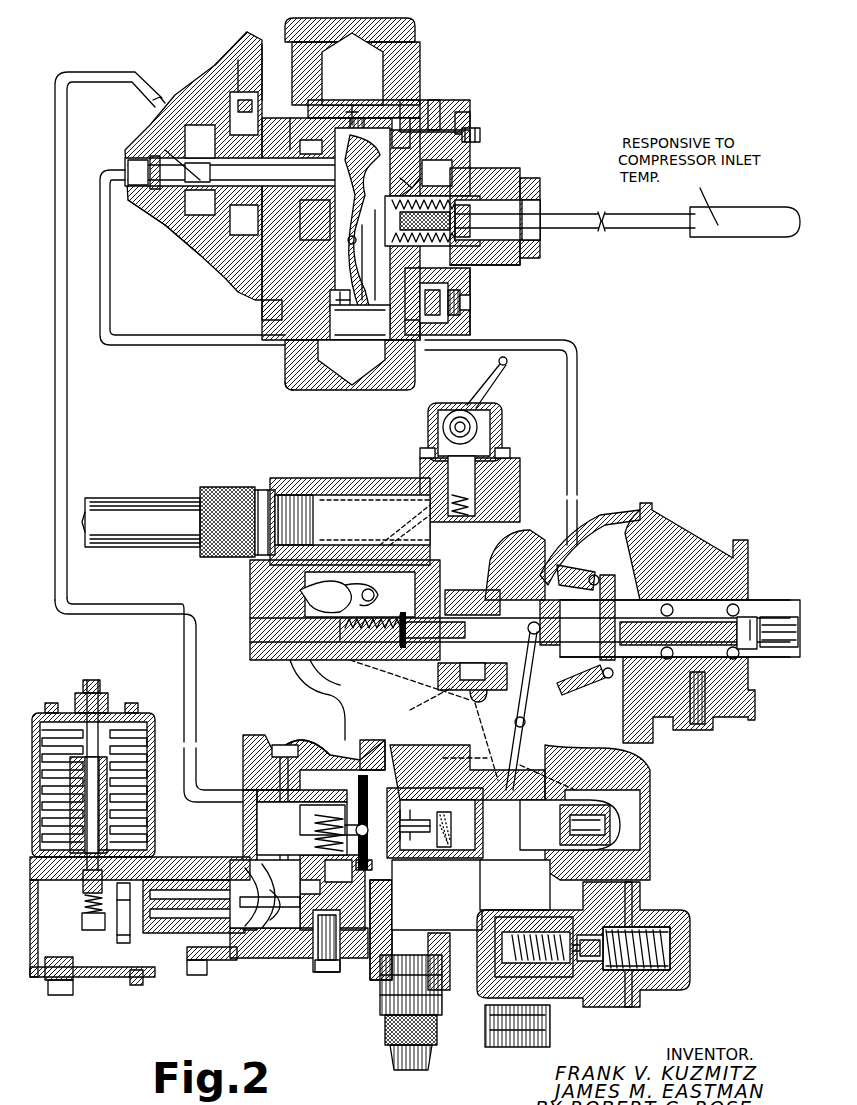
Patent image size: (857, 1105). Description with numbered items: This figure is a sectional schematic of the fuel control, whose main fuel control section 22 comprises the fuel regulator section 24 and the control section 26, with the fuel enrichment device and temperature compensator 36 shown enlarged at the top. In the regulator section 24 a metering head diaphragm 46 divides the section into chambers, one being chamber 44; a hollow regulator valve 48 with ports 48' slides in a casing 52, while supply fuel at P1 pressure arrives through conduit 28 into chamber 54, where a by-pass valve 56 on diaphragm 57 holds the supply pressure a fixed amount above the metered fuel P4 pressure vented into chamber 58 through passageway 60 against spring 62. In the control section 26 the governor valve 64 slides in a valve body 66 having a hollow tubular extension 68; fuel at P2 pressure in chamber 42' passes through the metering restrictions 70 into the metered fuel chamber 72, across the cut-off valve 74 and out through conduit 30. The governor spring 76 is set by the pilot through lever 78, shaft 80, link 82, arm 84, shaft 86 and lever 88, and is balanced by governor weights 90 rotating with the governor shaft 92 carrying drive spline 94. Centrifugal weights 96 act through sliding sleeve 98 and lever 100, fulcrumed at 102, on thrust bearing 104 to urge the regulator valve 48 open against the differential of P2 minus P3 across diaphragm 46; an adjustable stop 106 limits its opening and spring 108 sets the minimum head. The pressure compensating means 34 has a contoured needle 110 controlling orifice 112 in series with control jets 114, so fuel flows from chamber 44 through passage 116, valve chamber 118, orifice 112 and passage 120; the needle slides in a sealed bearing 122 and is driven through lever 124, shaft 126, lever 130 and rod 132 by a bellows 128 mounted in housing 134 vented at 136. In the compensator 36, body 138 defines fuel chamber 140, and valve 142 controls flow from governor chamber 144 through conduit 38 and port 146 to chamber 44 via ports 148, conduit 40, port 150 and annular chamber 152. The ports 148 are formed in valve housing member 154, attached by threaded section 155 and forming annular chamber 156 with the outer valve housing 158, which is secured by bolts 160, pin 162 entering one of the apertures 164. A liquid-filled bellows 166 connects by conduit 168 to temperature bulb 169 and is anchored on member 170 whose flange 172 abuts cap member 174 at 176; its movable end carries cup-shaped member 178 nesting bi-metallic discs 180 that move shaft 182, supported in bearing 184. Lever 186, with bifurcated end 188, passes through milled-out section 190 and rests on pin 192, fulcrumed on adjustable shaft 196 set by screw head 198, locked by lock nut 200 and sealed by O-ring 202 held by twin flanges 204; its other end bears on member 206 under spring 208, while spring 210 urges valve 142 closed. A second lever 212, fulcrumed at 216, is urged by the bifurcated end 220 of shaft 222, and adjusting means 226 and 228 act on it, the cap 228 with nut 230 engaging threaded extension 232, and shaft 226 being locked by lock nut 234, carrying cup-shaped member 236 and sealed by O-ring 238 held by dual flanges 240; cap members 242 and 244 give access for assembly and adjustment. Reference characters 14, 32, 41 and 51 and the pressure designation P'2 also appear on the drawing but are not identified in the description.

The main body 14 is at (395, 930).
The main fuel control section 22 is at (677, 772).
The fuel regulator section 24 is at (710, 984).
The control section 26 is at (678, 514).
The conduit 28 is at (402, 1072).
The conduit 30 is at (120, 510).
The outlet fitting 32 is at (550, 1042).
The pressure compensating means 34 is at (196, 828).
The fuel enrichment device and temperature compensator 36 is at (462, 87).
The conduit 38 is at (580, 432).
The conduit 40 is at (58, 432).
The valve seat 41 is at (372, 870).
The chamber 42' is at (397, 810).
The chamber 44 is at (314, 883).
The metering head diaphragm 46 is at (366, 785).
The regulator valve 48 is at (456, 829).
The ports 48' is at (427, 849).
The spring seat 51 is at (369, 842).
The casing 52 is at (415, 864).
The chamber 54 is at (437, 895).
The by-pass valve 56 is at (492, 955).
The diaphragm 57 is at (604, 992).
The chamber 58 is at (642, 918).
The passageway 60 is at (653, 882).
The spring 62 is at (672, 945).
The governor valve 64 is at (456, 662).
The valve body 66 is at (506, 625).
The hollow tubular extension 68 is at (370, 653).
The metering restrictions 70 is at (472, 643).
The metered fuel chamber 72 is at (530, 587).
The cut-off valve 74 is at (512, 500).
The governor spring 76 is at (371, 650).
The lever 78 is at (506, 380).
The shaft 80 is at (480, 428).
The adjustable rod or link 82 is at (350, 521).
The arm 84 is at (310, 573).
The shaft 86 is at (372, 590).
The lever 88 is at (330, 640).
The governor weights 90 is at (580, 680).
The governor shaft 92 is at (760, 650).
The drive spline 94 is at (774, 617).
The centrifugal weights 96 is at (572, 570).
The sliding sleeve 98 is at (580, 617).
The lever 100 is at (530, 705).
The fulcrum 102 is at (526, 727).
The thrust bearing 104 is at (482, 726).
The adjustable stop 106 is at (596, 825).
The spring 108 is at (356, 825).
The contoured needle 110 is at (280, 824).
The orifice 112 is at (255, 748).
The fixed control jets 114 is at (435, 815).
The passage 116 is at (375, 758).
The valve chamber 118 is at (270, 782).
The passage 120 is at (410, 685).
The sealed bearing 122 is at (265, 894).
The arm or lever 124 is at (262, 922).
The shaft 126 is at (250, 925).
The bellows 128 is at (150, 752).
The arm or lever 130 is at (118, 940).
The rod 132 is at (82, 882).
The housing 134 is at (112, 712).
The vent 136 is at (152, 775).
The body 138 is at (515, 278).
The fuel chamber 140 is at (158, 99).
The valve 142 is at (155, 218).
The governor chamber 144 is at (585, 528).
The port 146 is at (170, 152).
The ports 148 is at (215, 262).
The port 150 is at (258, 812).
The annular chamber 152 is at (278, 792).
The valve housing member 154 is at (231, 227).
The threaded section 155 is at (292, 127).
The annular chamber 156 is at (180, 238).
The outer valve housing 158 is at (220, 68).
The bolts 160 is at (333, 290).
The pin 162 is at (240, 100).
The apertures 164 is at (268, 60).
The liquid-filled bellows 166 is at (452, 301).
The conduit 168 is at (622, 230).
The temperature bulb 169 is at (728, 240).
The member 170 is at (502, 301).
The integral flange 172 is at (492, 182).
The cap member 174 is at (544, 184).
The abutment 176 is at (460, 185).
The cup-shaped member 178 is at (396, 255).
The bi-metallic fuel temperature compensating discs 180 is at (426, 244).
The actuable shaft 182 is at (432, 236).
The bearing 184 is at (298, 240).
The lever 186 is at (353, 230).
The bifurcated end 188 is at (368, 301).
The milled-out section 190 is at (380, 262).
The pin 192 is at (364, 245).
The adjustable shaft 196 is at (360, 322).
The external screw head 198 is at (483, 306).
The lock nut 200 is at (470, 325).
The O-ring seal 202 is at (432, 356).
The twin flanges 204 is at (440, 328).
The slideable bearing and spring-retaining member 206 is at (322, 141).
The spring 208 is at (206, 178).
The spring 210 is at (236, 128).
The second lever 212 is at (421, 187).
The fulcrum 216 is at (377, 128).
The bifurcated end 220 is at (427, 163).
The shaft 222 is at (235, 176).
The adjustment shaft 226 is at (482, 136).
The adjusting means 228 is at (356, 69).
The round edge multi-sided nut 230 is at (364, 109).
The threaded extension 232 is at (360, 108).
The lock nut 234 is at (472, 120).
The cup-shaped member 236 is at (414, 127).
The O-ring seal 238 is at (435, 108).
The dual-flanged members 240 is at (466, 108).
The cap member 242 is at (418, 386).
The cap member 244 is at (420, 30).
The supply pressure P1 is at (515, 885).
The P2 pressure P2 is at (509, 720).
The pressure P'2 is at (605, 561).
The P3 pressure P3 is at (323, 808).
The metered fuel pressure P4 is at (472, 597).